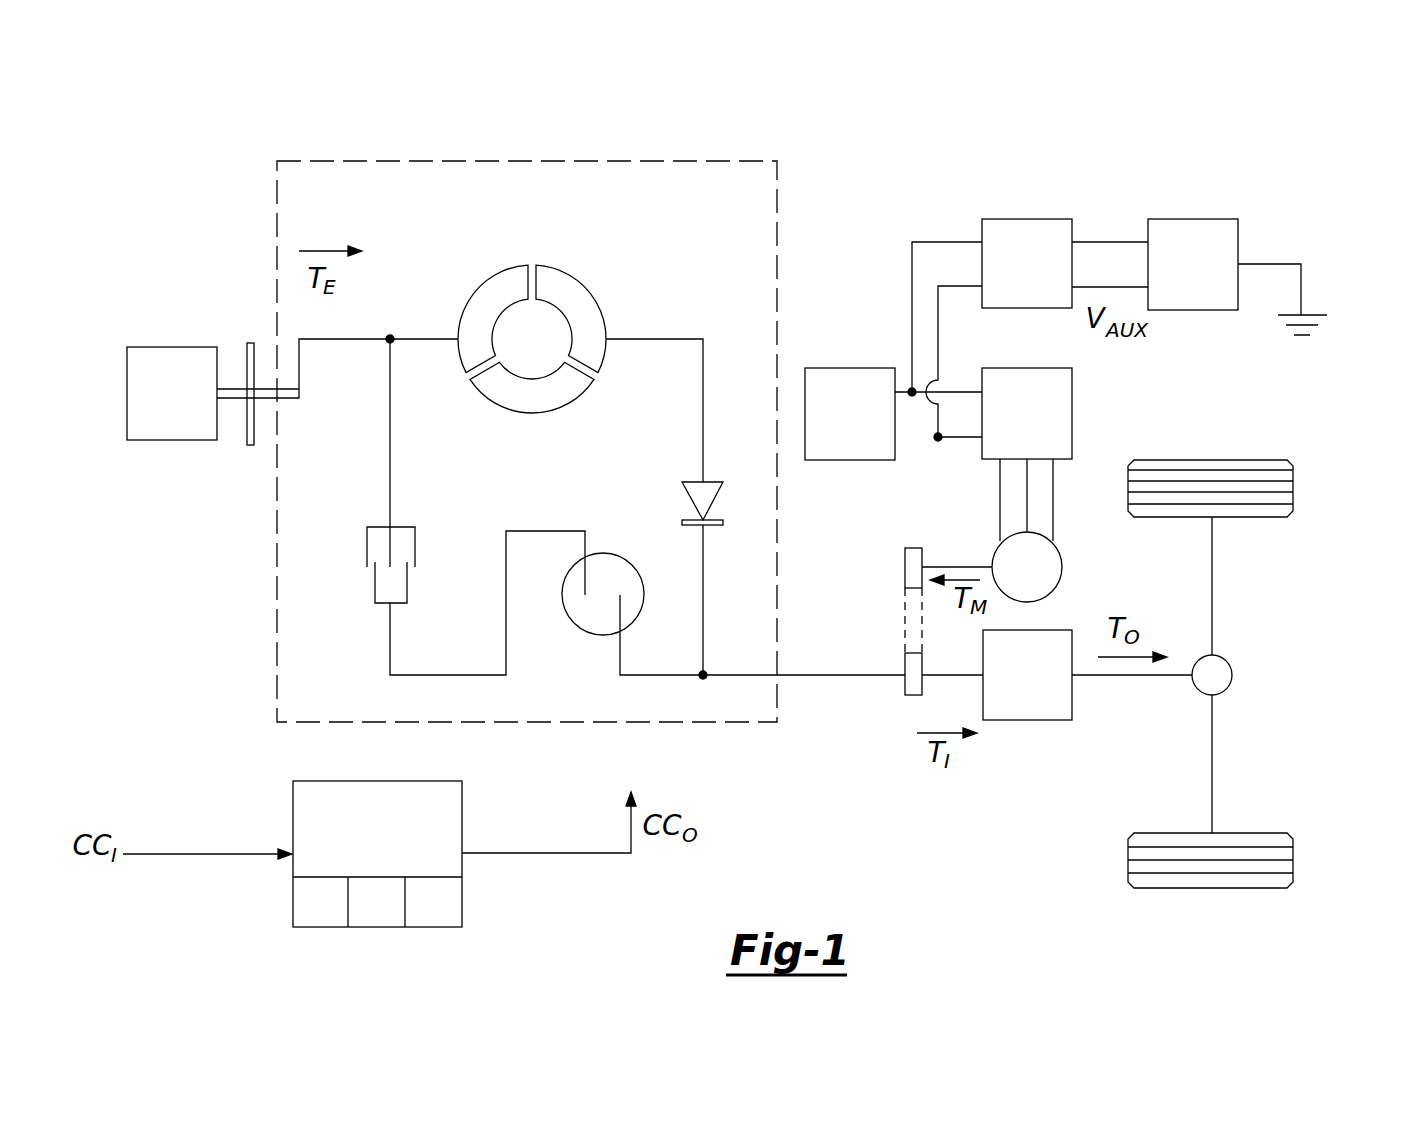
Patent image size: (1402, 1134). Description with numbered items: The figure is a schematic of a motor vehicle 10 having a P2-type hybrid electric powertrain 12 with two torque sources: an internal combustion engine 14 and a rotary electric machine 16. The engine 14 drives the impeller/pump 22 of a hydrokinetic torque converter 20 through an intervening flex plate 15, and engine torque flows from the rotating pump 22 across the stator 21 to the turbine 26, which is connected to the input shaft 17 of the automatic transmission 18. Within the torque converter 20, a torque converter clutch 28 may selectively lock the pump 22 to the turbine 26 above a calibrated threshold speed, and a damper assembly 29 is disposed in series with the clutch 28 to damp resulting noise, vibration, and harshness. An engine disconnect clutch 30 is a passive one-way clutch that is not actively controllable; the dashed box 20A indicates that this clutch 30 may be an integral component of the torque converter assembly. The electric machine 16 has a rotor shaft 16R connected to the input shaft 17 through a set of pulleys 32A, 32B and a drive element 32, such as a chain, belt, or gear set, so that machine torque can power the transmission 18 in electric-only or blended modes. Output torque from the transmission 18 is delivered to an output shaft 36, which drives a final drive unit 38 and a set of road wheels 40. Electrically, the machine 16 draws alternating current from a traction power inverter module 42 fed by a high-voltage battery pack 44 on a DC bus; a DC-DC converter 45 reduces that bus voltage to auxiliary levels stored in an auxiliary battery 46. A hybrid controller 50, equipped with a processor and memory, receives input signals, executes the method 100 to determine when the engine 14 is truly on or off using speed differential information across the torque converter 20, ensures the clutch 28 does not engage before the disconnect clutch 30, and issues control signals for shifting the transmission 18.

The motor vehicle 10 is at (1318, 155).
The hybrid electric powertrain 12 is at (1248, 640).
The internal combustion engine 14 is at (173, 347).
The flex plate 15 is at (255, 423).
The rotary electric machine 16 is at (1062, 567).
The rotor shaft 16R is at (957, 567).
The input shaft 17 is at (952, 675).
The automatic transmission 18 is at (1027, 720).
The hydrokinetic torque converter 20 is at (529, 335).
The torque converter assembly box 20A is at (388, 158).
The stator 21 is at (532, 413).
The impeller/pump 22 is at (470, 295).
The turbine 26 is at (583, 285).
The torque converter clutch 28 is at (432, 540).
The damper assembly 29 is at (603, 540).
The engine disconnect clutch 30 is at (658, 468).
The drive element 32 is at (872, 621).
The first pulley 32A is at (905, 567).
The second pulley 32B is at (905, 663).
The output shaft 36 is at (1132, 677).
The final drive unit 38 is at (1232, 675).
The road wheels 40 is at (1293, 487).
The traction power inverter module 42 is at (1075, 412).
The high-voltage battery pack 44 is at (850, 368).
The DC-DC converter 45 is at (1027, 219).
The auxiliary battery 46 is at (1193, 219).
The hybrid controller 50 is at (379, 854).
The method 100 is at (303, 912).